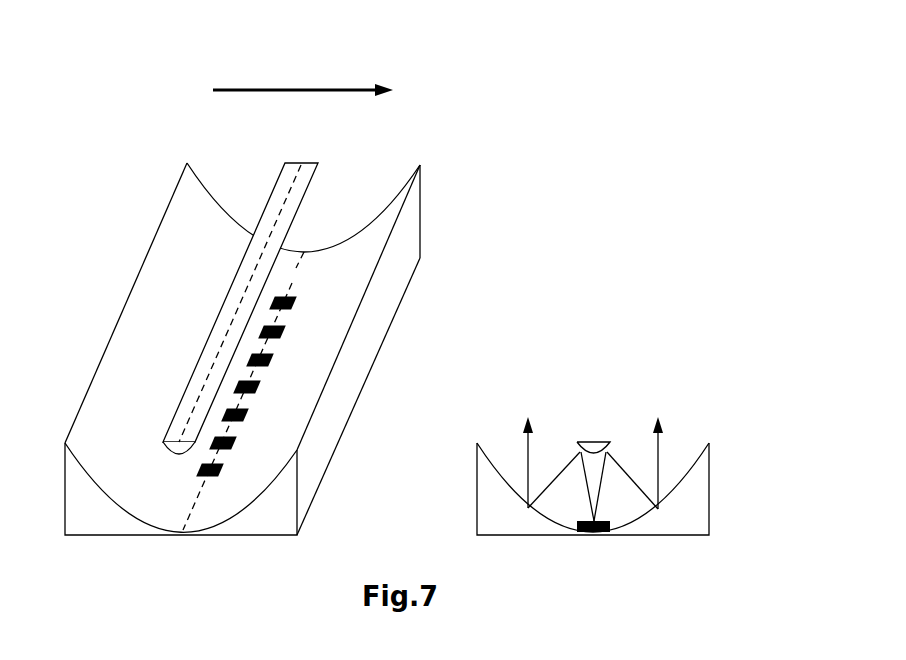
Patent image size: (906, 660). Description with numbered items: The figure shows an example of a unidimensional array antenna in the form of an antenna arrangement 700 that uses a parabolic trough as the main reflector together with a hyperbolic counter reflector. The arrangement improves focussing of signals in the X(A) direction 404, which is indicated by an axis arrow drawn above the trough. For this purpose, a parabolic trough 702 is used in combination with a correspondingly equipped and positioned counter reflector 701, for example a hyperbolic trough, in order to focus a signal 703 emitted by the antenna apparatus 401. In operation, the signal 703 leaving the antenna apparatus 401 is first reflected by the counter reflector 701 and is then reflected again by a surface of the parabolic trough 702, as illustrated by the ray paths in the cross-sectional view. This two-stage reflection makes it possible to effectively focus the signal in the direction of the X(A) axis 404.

The antenna arrangement 700 is at (586, 170).
The X(A) direction 404 is at (237, 90).
The counter reflector 701 is at (306, 163).
The parabolic trough 702 is at (403, 220).
The antenna apparatus 401 is at (270, 352).
The signal 703 is at (658, 448).